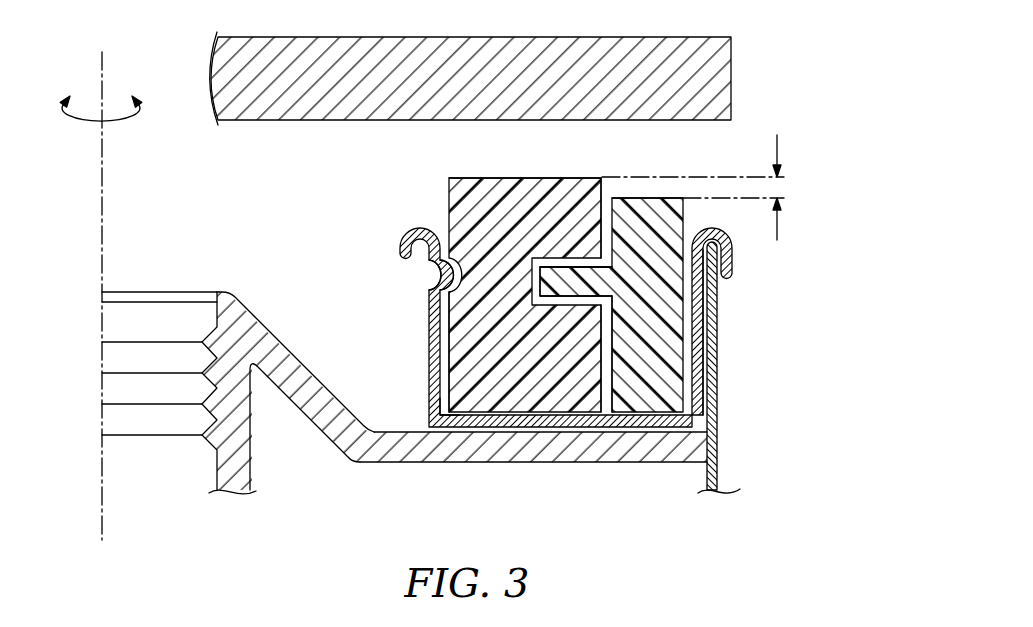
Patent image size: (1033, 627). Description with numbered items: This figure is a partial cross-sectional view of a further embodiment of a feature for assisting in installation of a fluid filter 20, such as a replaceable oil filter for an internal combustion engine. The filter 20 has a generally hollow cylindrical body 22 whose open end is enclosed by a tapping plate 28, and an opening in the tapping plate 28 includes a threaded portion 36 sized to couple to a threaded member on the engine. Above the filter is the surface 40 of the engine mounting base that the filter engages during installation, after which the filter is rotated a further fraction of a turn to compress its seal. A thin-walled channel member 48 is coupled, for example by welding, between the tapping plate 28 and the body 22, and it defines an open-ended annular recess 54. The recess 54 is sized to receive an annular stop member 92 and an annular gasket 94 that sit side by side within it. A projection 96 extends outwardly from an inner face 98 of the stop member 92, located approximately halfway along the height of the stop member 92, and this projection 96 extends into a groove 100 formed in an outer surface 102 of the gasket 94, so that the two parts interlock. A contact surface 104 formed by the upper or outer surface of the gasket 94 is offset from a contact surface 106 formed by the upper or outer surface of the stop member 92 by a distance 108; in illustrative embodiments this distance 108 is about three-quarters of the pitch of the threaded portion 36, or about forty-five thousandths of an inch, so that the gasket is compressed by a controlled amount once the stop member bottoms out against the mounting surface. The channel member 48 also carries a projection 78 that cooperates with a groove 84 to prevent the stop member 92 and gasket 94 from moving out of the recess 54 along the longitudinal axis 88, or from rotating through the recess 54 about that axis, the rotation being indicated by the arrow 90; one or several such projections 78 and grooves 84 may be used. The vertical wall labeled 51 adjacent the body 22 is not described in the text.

The fluid filter 20 is at (768, 371).
The body 22 is at (724, 487).
The tapping plate 28 is at (518, 464).
The threaded portion 36 is at (211, 387).
The surface 40 is at (288, 122).
The channel member 48 is at (430, 335).
The lip 51 is at (703, 313).
The annular recess 54 is at (446, 414).
The projection 78 is at (440, 276).
The groove 84 is at (474, 252).
The longitudinal axis 88 is at (105, 60).
The rotational movement 90 is at (78, 123).
The annular stop member 92 is at (630, 294).
The annular gasket 94 is at (479, 339).
The projection 96 is at (559, 294).
The inner face 98 is at (611, 406).
The groove 100 is at (578, 256).
The outer surface 102 is at (603, 197).
The contact surface 104 is at (482, 178).
The contact surface 106 is at (667, 197).
The distance 108 is at (778, 225).